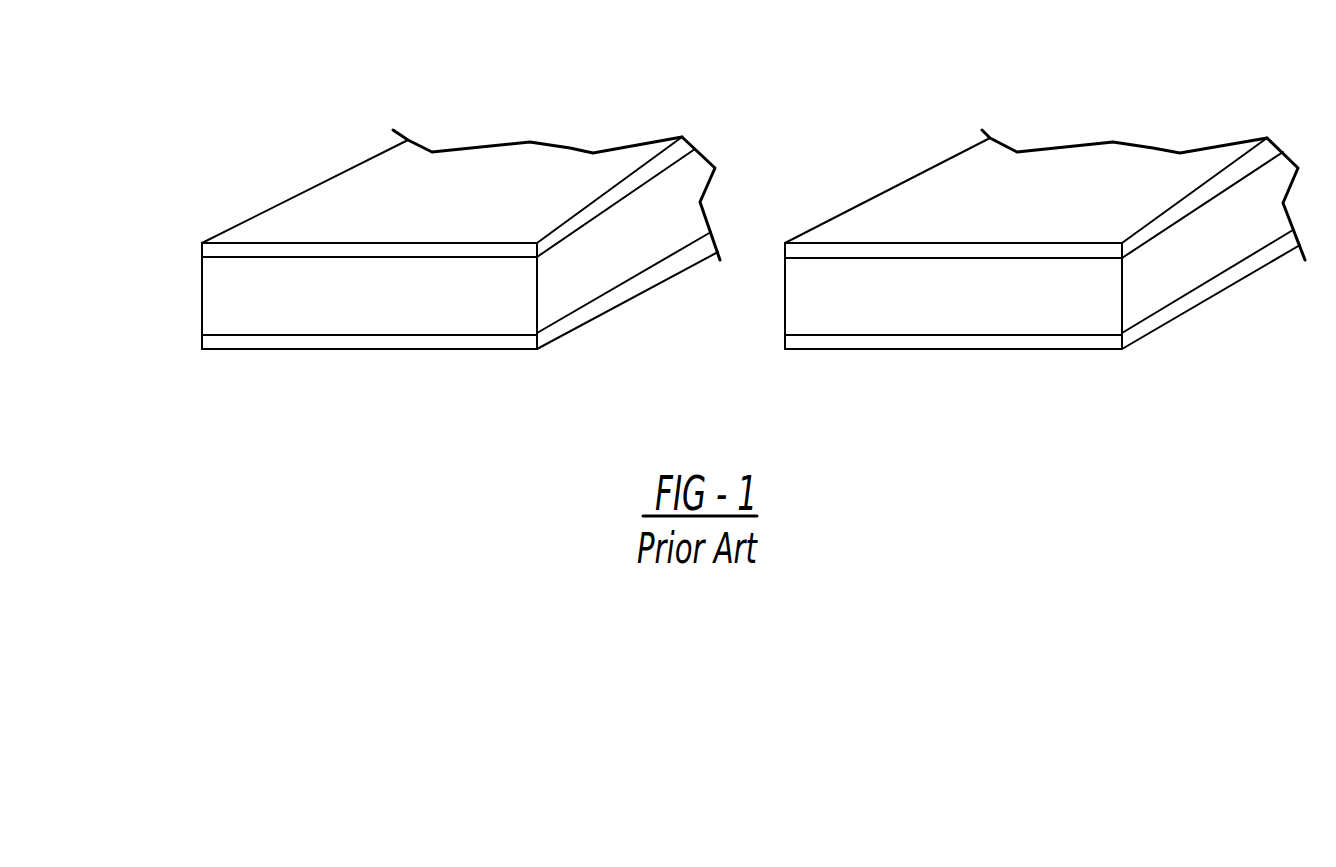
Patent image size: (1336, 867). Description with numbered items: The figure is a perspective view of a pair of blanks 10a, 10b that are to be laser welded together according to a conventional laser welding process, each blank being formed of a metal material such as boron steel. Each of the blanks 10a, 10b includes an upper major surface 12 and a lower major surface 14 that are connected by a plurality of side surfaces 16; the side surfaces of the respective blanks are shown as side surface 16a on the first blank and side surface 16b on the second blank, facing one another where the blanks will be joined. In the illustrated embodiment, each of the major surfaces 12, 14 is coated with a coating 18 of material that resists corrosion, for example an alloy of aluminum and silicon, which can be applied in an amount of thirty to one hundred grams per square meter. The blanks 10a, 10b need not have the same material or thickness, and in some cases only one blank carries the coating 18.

The blank 10a is at (255, 168).
The blank 10b is at (867, 155).
The upper major surface 12 is at (430, 257).
The lower major surface 14 is at (360, 335).
The side surfaces 16 is at (202, 283).
The side surface 16a is at (578, 277).
The side surface 16b is at (785, 278).
The coating 18 is at (563, 163).